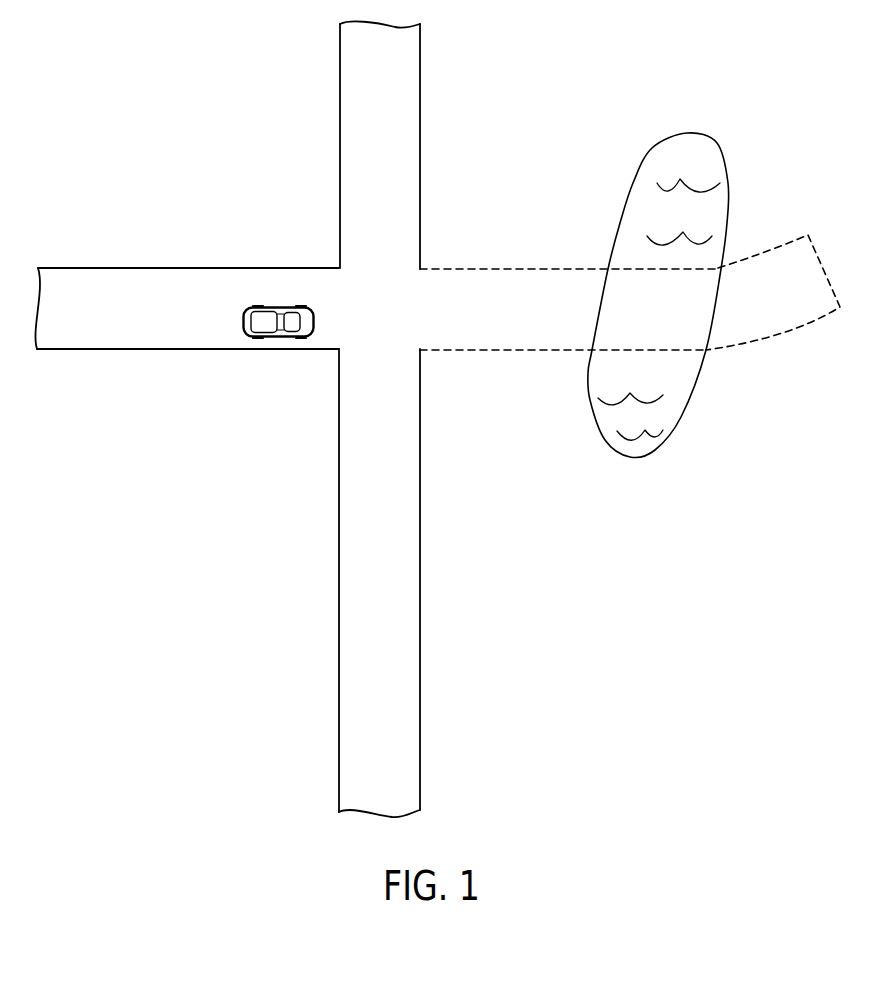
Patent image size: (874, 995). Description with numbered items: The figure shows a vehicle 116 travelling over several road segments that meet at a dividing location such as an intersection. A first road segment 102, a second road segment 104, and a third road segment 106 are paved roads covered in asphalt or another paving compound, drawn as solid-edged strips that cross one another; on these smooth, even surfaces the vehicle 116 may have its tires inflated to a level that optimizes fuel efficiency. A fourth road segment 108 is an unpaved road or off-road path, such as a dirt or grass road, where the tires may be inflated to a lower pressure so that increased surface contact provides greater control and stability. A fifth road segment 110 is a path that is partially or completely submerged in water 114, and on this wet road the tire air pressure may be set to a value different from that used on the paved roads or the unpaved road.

The first road segment 102 is at (124, 332).
The second road segment 104 is at (405, 531).
The third road segment 106 is at (406, 131).
The fourth road segment 108 is at (531, 281).
The fifth road segment 110 is at (700, 298).
The water 114 is at (693, 187).
The vehicle 116 is at (273, 339).